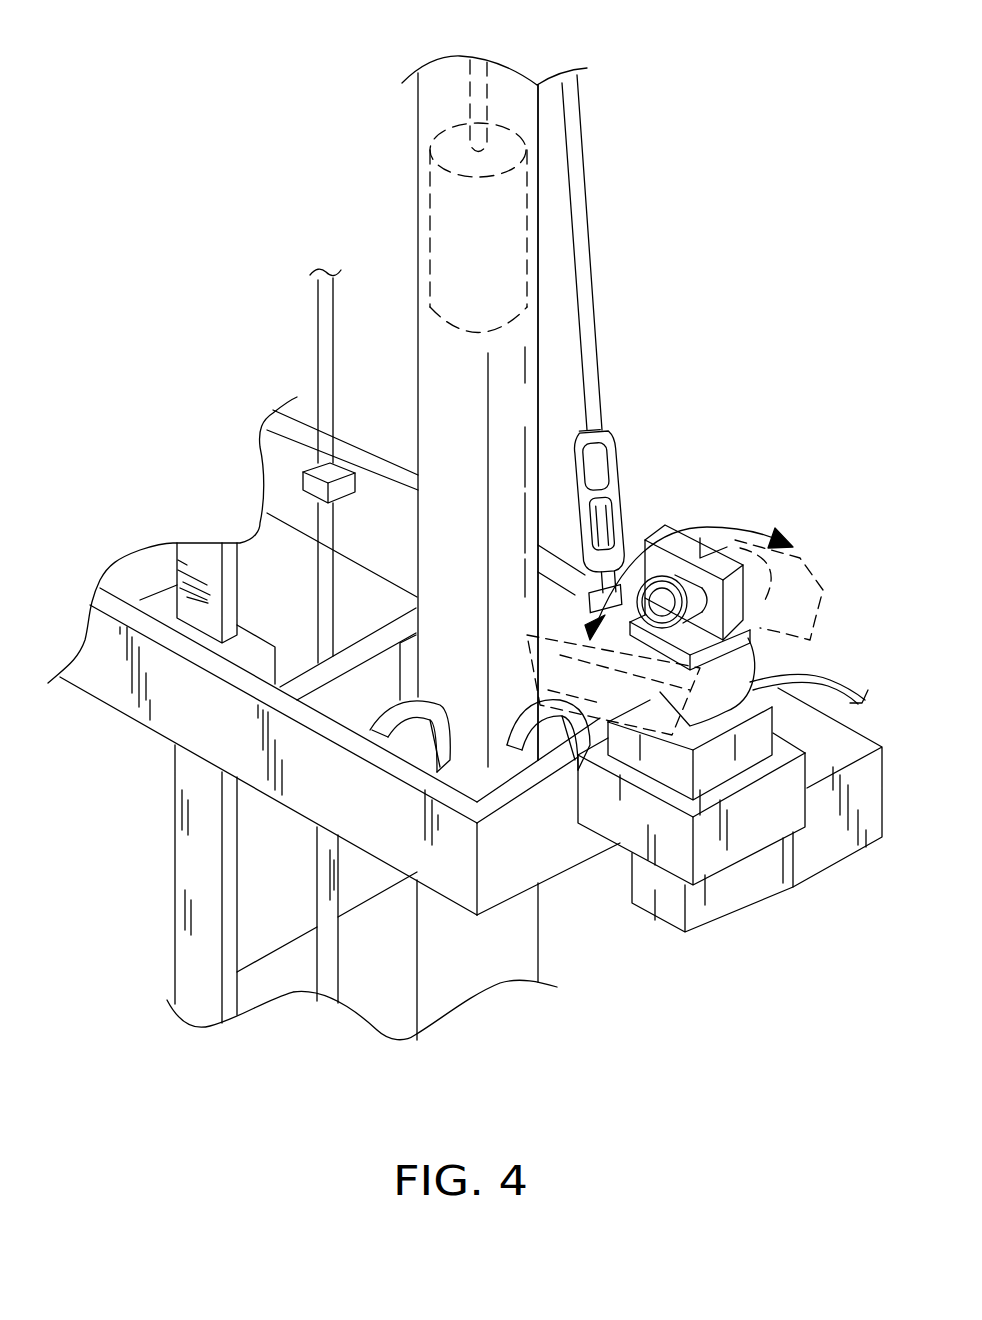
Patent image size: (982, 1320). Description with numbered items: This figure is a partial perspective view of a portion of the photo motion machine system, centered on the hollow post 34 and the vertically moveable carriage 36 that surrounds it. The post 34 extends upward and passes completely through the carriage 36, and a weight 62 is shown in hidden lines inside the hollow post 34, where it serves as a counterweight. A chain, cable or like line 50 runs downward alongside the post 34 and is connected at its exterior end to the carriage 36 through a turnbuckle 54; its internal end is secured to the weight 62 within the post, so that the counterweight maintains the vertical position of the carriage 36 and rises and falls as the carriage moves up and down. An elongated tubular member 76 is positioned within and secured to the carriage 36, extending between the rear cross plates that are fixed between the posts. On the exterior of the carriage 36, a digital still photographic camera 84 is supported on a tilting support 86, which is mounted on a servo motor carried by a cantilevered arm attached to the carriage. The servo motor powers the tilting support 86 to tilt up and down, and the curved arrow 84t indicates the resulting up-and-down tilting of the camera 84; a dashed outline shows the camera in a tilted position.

The hollow post 34 is at (502, 402).
The vertically moveable carriage 36 is at (547, 843).
The line 50 is at (580, 203).
The turnbuckle 54 is at (620, 440).
The weight 62 is at (453, 213).
The elongated tubular member 76 is at (323, 347).
The digital still photographic camera 84 is at (655, 530).
The camera tilt direction 84t is at (728, 530).
The tilting support 86 is at (727, 672).